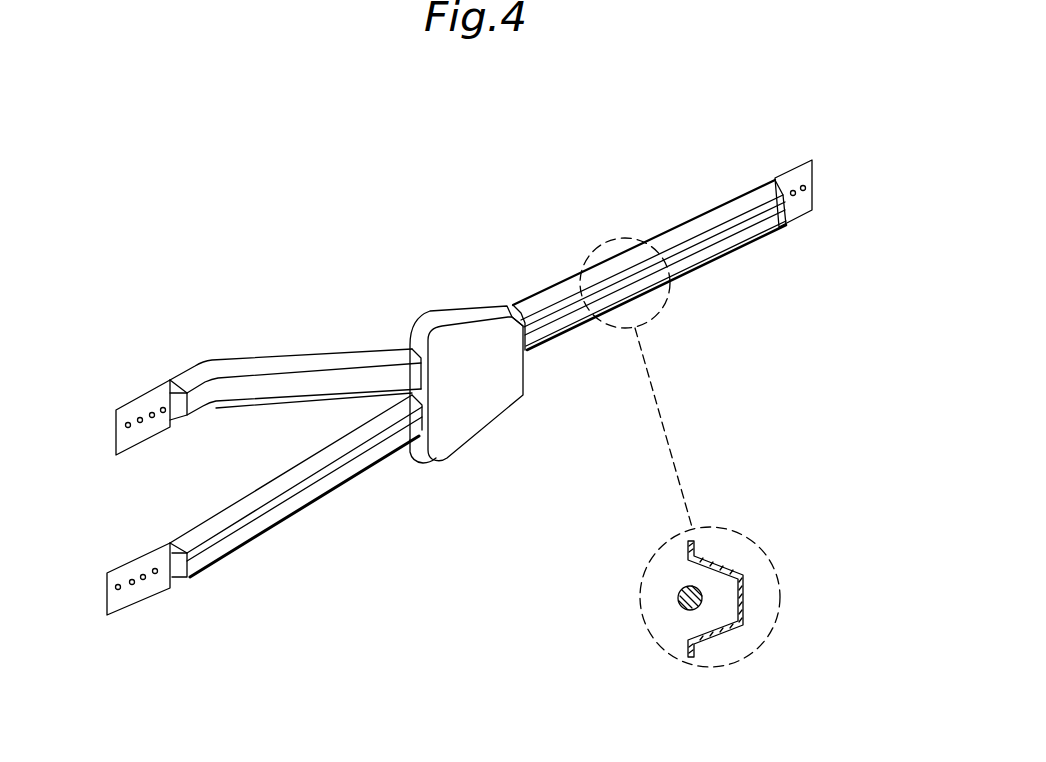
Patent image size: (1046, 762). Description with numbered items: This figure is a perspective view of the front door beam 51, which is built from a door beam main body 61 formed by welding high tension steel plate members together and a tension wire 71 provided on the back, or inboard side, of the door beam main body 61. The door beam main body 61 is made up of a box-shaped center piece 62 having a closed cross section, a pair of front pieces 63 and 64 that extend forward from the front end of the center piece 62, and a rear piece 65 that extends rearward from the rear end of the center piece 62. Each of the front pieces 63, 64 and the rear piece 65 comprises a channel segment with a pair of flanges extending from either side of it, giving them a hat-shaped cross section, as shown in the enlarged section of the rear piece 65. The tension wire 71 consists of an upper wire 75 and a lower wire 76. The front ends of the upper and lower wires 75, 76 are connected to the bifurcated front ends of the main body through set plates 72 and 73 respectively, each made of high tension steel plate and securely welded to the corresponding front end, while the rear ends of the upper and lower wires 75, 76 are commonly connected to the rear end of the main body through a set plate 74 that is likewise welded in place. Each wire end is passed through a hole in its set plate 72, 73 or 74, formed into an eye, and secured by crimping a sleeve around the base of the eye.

The front door beam 51 is at (385, 152).
The door beam main body 61 is at (435, 311).
The center piece 62 is at (477, 420).
The front piece 63 is at (228, 370).
The front piece 64 is at (257, 523).
The rear piece 65 is at (708, 253).
The tension wire 71 is at (123, 403).
The set plate 72 is at (120, 437).
The set plate 73 is at (125, 603).
The set plate 74 is at (801, 174).
The upper wire 75 is at (676, 606).
The lower wire 76 is at (690, 598).